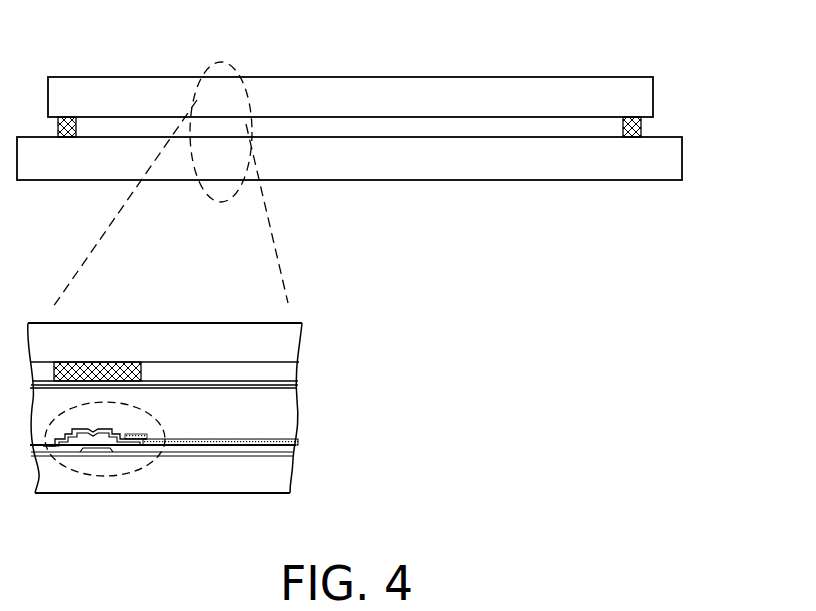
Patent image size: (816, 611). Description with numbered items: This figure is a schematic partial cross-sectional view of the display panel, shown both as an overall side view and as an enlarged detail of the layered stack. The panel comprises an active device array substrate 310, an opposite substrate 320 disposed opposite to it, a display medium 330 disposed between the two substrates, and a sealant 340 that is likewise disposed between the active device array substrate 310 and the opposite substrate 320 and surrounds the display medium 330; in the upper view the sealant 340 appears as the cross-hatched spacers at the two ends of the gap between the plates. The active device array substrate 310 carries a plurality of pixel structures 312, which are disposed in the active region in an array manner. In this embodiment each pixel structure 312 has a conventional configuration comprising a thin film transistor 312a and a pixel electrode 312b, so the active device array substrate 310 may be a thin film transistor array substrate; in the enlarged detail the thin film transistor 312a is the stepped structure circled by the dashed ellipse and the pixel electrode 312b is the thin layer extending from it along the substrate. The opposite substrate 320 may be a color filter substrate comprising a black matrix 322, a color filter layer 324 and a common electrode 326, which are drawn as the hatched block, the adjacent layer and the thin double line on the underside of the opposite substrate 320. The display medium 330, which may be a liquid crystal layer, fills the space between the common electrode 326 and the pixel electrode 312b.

The active device array substrate 310 is at (690, 162).
The opposite substrate 320 is at (662, 97).
The display medium 330 is at (538, 130).
The sealant 340 is at (643, 128).
The black matrix 322 is at (103, 363).
The color filter layer 324 is at (243, 372).
The common electrode 326 is at (178, 386).
The pixel structure 312 is at (170, 500).
The thin film transistor 312a is at (67, 472).
The pixel electrode 312b is at (183, 446).